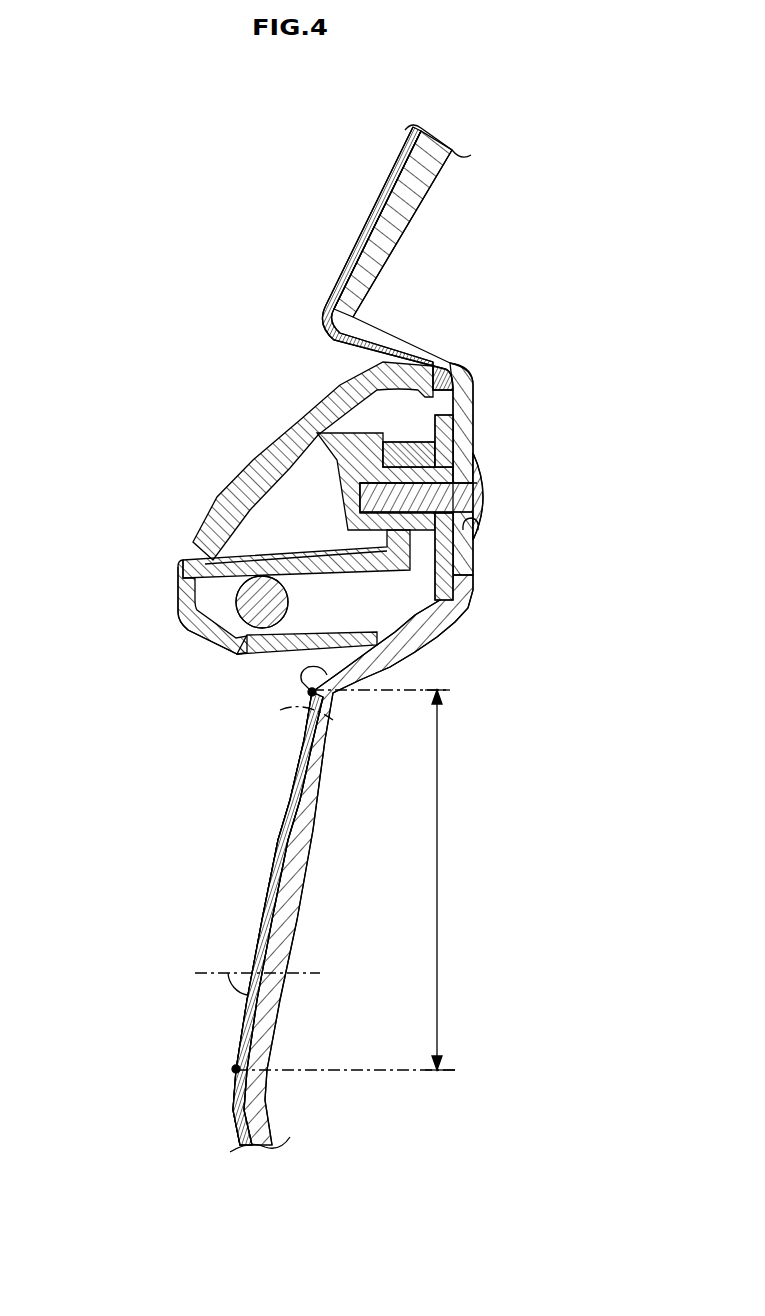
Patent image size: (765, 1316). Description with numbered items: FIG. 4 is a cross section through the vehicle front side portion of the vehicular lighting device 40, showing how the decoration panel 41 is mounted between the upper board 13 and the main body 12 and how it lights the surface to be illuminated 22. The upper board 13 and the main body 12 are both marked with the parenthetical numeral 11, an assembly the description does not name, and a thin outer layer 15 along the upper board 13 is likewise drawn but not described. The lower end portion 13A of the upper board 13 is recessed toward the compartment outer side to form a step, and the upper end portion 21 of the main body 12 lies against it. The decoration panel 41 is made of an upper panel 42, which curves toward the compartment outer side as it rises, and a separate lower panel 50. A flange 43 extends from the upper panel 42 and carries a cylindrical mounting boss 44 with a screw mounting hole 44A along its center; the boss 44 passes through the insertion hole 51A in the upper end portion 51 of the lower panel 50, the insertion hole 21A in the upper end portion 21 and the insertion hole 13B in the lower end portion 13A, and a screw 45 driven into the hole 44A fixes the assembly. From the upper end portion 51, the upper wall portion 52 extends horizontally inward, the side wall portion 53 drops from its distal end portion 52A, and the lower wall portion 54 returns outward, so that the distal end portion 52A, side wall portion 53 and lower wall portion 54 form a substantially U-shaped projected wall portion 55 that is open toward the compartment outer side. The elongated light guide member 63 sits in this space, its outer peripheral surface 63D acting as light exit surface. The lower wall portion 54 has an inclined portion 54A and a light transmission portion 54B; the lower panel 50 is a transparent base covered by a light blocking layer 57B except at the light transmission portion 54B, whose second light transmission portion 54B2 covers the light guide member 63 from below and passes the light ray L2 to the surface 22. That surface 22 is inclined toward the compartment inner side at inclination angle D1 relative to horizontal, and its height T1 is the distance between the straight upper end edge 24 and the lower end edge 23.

The vehicle panel 11 is at (457, 606).
The main body 12 is at (268, 1022).
The upper board 13 is at (428, 163).
The lower end portion 13A is at (462, 410).
The insertion hole 13B is at (470, 523).
The outer skin layer 15 is at (367, 224).
The upper end portion 21 is at (437, 432).
The insertion hole 21A is at (450, 503).
The surface to be illuminated 22 is at (280, 879).
The lower end edge 23 is at (236, 1069).
The upper end edge 24 is at (327, 675).
The vehicular lighting device 40 is at (231, 487).
The decoration panel 41 is at (246, 462).
The upper panel 42 is at (335, 398).
The flange 43 is at (392, 445).
The mounting boss 44 is at (437, 432).
The screw mounting hole 44A is at (473, 487).
The screw 45 is at (478, 475).
The lower panel 50 is at (213, 530).
The upper end portion 51 is at (397, 430).
The insertion hole 51A is at (457, 567).
The upper wall portion 52 is at (312, 545).
The distal end portion 52A is at (180, 568).
The side wall portion 53 is at (190, 598).
The lower wall portion 54 is at (188, 632).
The inclined portion 54A is at (207, 627).
The light transmission portion 54B is at (260, 702).
The second light transmission portion 54B2 is at (295, 683).
The projected wall portion 55 is at (60, 568).
The light blocking layer 57B is at (240, 657).
The light guide member 63 is at (245, 625).
The outer peripheral surface 63D is at (253, 555).
The inclination angle D1 is at (237, 993).
The light ray L2 is at (335, 722).
The length of surface in upper-lower direction T1 is at (451, 880).